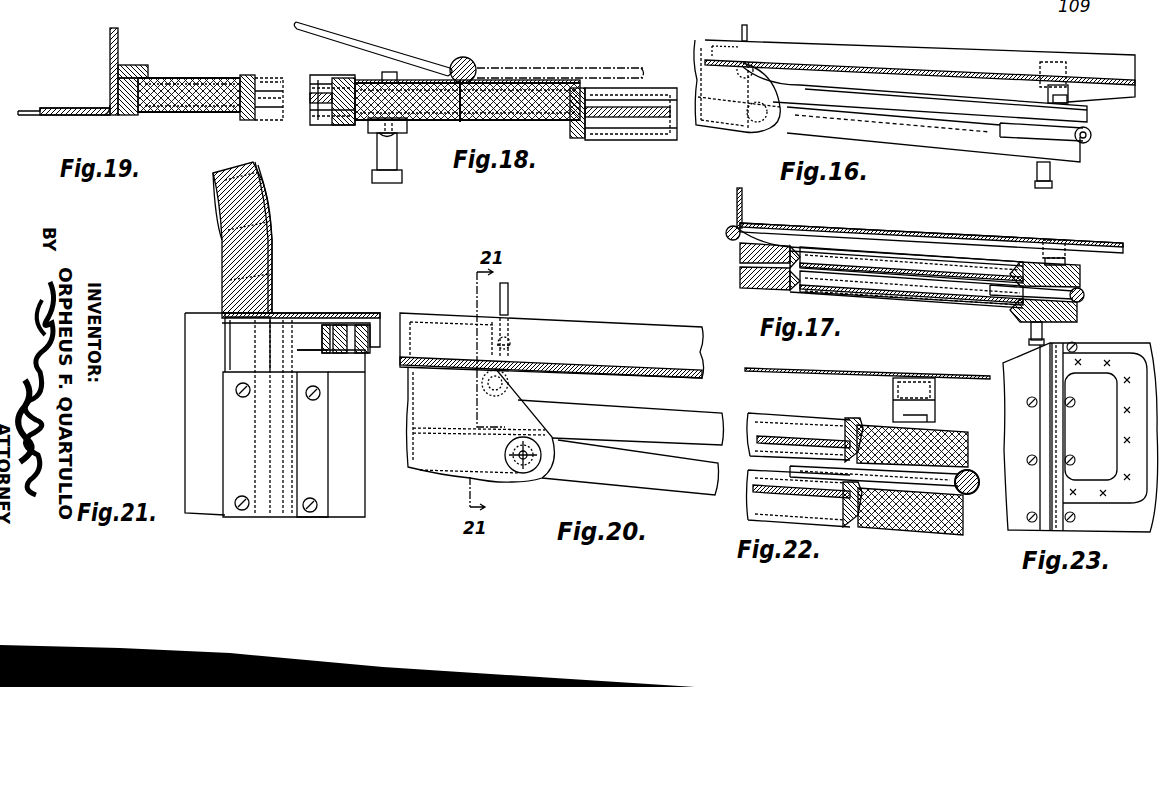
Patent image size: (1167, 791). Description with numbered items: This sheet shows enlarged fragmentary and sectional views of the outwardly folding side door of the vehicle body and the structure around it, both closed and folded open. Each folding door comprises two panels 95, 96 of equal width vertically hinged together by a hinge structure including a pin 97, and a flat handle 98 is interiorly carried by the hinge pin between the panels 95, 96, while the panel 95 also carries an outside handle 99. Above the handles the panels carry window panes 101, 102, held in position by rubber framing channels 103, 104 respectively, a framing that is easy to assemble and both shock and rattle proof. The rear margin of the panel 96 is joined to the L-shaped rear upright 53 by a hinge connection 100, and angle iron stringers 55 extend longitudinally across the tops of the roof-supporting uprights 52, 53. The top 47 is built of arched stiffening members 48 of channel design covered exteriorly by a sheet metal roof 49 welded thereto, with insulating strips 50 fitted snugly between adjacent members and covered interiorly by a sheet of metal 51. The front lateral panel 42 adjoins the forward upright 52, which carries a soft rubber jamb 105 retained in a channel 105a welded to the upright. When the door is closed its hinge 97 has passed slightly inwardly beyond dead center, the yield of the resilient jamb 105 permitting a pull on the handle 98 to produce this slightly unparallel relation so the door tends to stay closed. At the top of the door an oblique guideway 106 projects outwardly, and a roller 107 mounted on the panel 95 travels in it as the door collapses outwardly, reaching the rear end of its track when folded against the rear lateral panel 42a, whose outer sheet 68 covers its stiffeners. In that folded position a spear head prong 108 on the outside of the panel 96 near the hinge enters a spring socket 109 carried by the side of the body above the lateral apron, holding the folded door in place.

In FIG. 19, the front lateral panel 42 is at (25, 116).
In FIG. 17, the rear lateral panel 42a is at (952, 243).
In FIG. 22, the rear lateral panel 42a is at (778, 372).
In FIG. 21, the top 47 is at (271, 200).
In FIG. 21, the arched stiffening member 48 is at (262, 222).
In FIG. 16, the sheet metal roof 49 is at (1110, 87).
In FIG. 20, the sheet metal roof 49 is at (655, 376).
In FIG. 21, the sheet metal roof 49 is at (260, 165).
In FIG. 21, the insulating strip 50 is at (240, 230).
In FIG. 21, the interior metal sheet 51 is at (215, 190).
In FIG. 19, the front upright 52 is at (110, 42).
In FIG. 16, the rear upright 53 is at (750, 30).
In FIG. 17, the rear upright 53 is at (745, 195).
In FIG. 20, the rear upright 53 is at (510, 293).
In FIG. 21, the rear upright 53 is at (182, 394).
In FIG. 16, the angle iron stringer 55 is at (888, 55).
In FIG. 20, the angle iron stringer 55 is at (585, 362).
In FIG. 21, the angle iron stringer 55 is at (275, 295).
In FIG. 17, the outer sheet 68 is at (880, 237).
In FIG. 22, the outer sheet 68 is at (856, 375).
In FIG. 19, the door panel 95 is at (190, 108).
In FIG. 16, the door panel 95 is at (933, 142).
In FIG. 17, the door panel 95 is at (746, 288).
In FIG. 22, the door panel 95 is at (948, 533).
In FIG. 23, the door panel 95 is at (1128, 348).
In FIG. 20, the door panel 95 is at (678, 485).
In FIG. 21, the door panel 95 is at (350, 480).
In FIG. 18, the door panel 96 is at (552, 122).
In FIG. 16, the door panel 96 is at (952, 96).
In FIG. 17, the door panel 96 is at (738, 258).
In FIG. 22, the door panel 96 is at (965, 450).
In FIG. 23, the door panel 96 is at (1010, 372).
In FIG. 20, the door panel 96 is at (690, 415).
In FIG. 21, the door panel 96 is at (325, 372).
In FIG. 18, the hinge pin 97 is at (478, 58).
In FIG. 16, the hinge pin 97 is at (1094, 138).
In FIG. 17, the hinge pin 97 is at (1086, 296).
In FIG. 22, the hinge pin 97 is at (974, 494).
In FIG. 23, the hinge pin 97 is at (1063, 416).
In FIG. 18, the flat handle 98 is at (340, 33).
In FIG. 16, the flat handle 98 is at (1012, 142).
In FIG. 17, the flat handle 98 is at (1005, 300).
In FIG. 22, the flat handle 98 is at (822, 485).
In FIG. 23, the flat handle 98 is at (1112, 500).
In FIG. 18, the outside handle 99 is at (386, 184).
In FIG. 16, the outside handle 99 is at (1046, 188).
In FIG. 17, the outside handle 99 is at (1035, 332).
In FIG. 16, the hinge connection 100 is at (727, 79).
In FIG. 17, the hinge connection 100 is at (728, 231).
In FIG. 18, the window pane 101 is at (316, 92).
In FIG. 17, the window pane 101 is at (888, 305).
In FIG. 22, the window pane 101 is at (766, 508).
In FIG. 18, the window pane 102 is at (655, 140).
In FIG. 17, the window pane 102 is at (845, 249).
In FIG. 22, the window pane 102 is at (780, 416).
In FIG. 19, the rubber framing channel 103 is at (255, 75).
In FIG. 18, the rubber framing channel 103 is at (340, 78).
In FIG. 17, the rubber framing channel 103 is at (796, 289).
In FIG. 22, the rubber framing channel 103 is at (860, 527).
In FIG. 18, the rubber framing channel 104 is at (588, 136).
In FIG. 17, the rubber framing channel 104 is at (800, 248).
In FIG. 22, the rubber framing channel 104 is at (858, 412).
In FIG. 19, the rubber jamb 105 is at (130, 116).
In FIG. 19, the channel 105a is at (132, 64).
In FIG. 16, the oblique guideway 106 is at (707, 128).
In FIG. 20, the oblique guideway 106 is at (443, 478).
In FIG. 21, the oblique guideway 106 is at (372, 324).
In FIG. 16, the roller 107 is at (771, 128).
In FIG. 20, the roller 107 is at (547, 474).
In FIG. 21, the roller 107 is at (342, 324).
In FIG. 16, the spear head prong 108 is at (1075, 103).
In FIG. 17, the spear head prong 108 is at (1068, 265).
In FIG. 22, the spear head prong 108 is at (898, 380).
In FIG. 16, the spring socket 109 is at (1052, 72).
In FIG. 17, the spring socket 109 is at (1063, 256).
In FIG. 22, the spring socket 109 is at (930, 407).